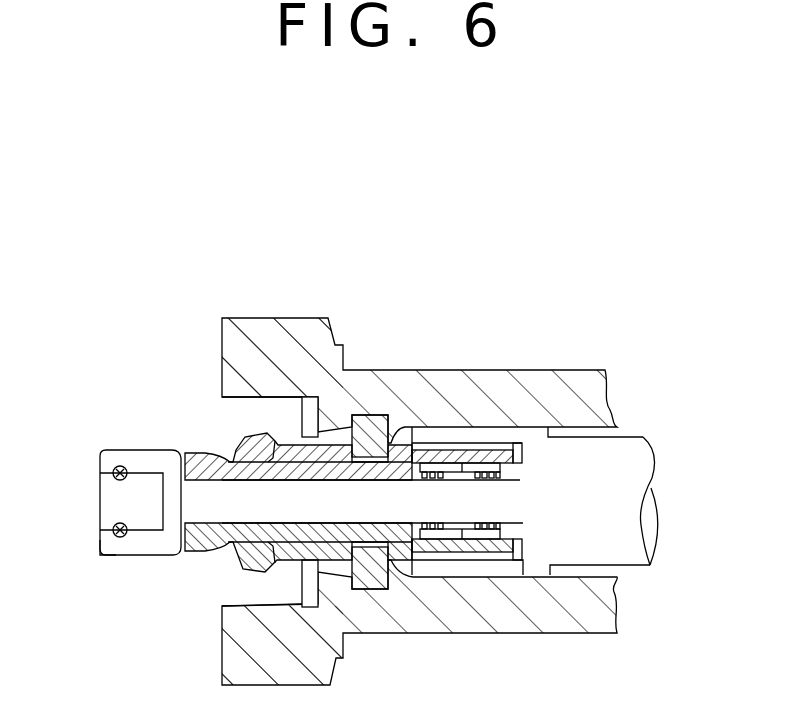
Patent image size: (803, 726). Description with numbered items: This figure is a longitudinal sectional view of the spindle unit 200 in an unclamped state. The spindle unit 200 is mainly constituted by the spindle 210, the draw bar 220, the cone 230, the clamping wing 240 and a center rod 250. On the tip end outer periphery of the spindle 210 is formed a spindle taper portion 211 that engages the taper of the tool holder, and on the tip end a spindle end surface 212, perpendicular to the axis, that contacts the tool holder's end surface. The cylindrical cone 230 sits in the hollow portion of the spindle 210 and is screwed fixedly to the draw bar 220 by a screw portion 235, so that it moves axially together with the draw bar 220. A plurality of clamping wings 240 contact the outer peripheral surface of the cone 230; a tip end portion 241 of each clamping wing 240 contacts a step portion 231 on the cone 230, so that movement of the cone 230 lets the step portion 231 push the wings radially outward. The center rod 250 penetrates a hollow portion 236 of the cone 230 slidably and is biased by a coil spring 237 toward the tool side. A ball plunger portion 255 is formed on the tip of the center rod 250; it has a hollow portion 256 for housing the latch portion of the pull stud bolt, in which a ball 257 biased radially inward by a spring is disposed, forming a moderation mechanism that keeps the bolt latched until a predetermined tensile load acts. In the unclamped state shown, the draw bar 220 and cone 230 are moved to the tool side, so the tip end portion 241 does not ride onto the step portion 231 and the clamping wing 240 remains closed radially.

The spindle unit 200 is at (575, 272).
The spindle 210 is at (587, 387).
The spindle taper portion 211 is at (270, 401).
The spindle end surface 212 is at (222, 362).
The draw bar 220 is at (640, 462).
The cone 230 is at (201, 549).
The step portion 231 is at (200, 455).
The screw portion 235 is at (448, 443).
The hollow portion 236 is at (253, 480).
The coil spring 237 is at (488, 480).
The clamping wing 240 is at (343, 567).
The tip end portion 241 is at (242, 437).
The center rod 250 is at (218, 505).
The ball plunger portion 255 is at (110, 547).
The hollow portion 256 is at (114, 477).
The ball 257 is at (114, 528).